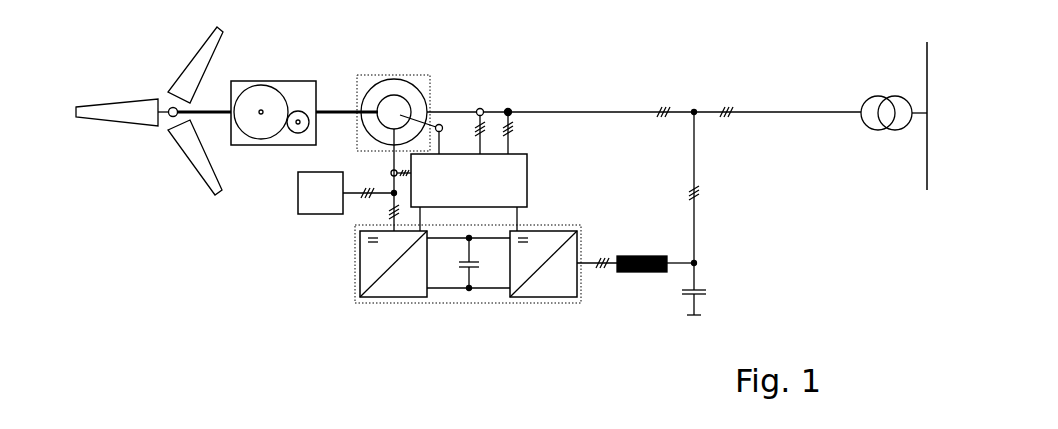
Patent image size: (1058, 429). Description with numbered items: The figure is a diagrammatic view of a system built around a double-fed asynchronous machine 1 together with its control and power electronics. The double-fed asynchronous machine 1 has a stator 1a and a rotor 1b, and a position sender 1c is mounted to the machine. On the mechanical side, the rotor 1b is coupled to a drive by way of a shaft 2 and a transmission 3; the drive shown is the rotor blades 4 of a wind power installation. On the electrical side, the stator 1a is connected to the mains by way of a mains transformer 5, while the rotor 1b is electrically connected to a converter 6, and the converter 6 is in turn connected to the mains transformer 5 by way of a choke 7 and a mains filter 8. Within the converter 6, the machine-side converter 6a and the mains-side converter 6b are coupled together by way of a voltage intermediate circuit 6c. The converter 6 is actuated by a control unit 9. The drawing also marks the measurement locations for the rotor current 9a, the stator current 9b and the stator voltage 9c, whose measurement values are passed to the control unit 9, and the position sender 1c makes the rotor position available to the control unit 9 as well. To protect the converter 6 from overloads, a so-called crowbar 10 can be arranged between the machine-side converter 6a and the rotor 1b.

The double-fed asynchronous machine 1 is at (408, 107).
The stator 1a is at (394, 112).
The rotor 1b is at (394, 112).
The position sender 1c is at (429, 134).
The shaft 2 is at (277, 103).
The transmission 3 is at (273, 113).
The rotor blades 4 is at (149, 111).
The mains transformer 5 is at (894, 116).
The converter 6 is at (468, 274).
The machine-side converter 6a is at (393, 264).
The mains-side converter 6b is at (543, 264).
The voltage intermediate circuit 6c is at (468, 263).
The choke 7 is at (635, 253).
The mains filter 8 is at (698, 288).
The control unit 9 is at (469, 192).
The rotor current measurement location 9a is at (391, 169).
The stator current measurement location 9b is at (474, 122).
The stator voltage measurement location 9c is at (512, 122).
The crowbar 10 is at (346, 193).